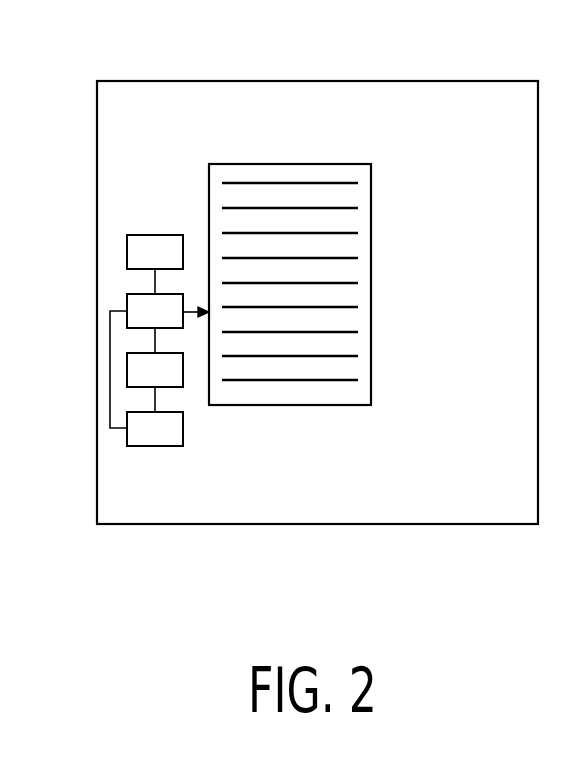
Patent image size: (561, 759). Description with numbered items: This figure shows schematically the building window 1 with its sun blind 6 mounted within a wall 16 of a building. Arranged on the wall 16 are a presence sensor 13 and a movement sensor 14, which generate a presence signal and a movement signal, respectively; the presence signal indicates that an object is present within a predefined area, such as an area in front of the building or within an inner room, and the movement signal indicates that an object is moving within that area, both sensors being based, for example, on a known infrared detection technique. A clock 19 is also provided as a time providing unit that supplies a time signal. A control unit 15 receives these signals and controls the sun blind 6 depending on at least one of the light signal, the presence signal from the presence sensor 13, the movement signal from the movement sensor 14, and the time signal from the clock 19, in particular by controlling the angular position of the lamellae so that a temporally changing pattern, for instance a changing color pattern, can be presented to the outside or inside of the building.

The building window 1 is at (327, 164).
The sun blind 6 is at (288, 355).
The presence sensor 13 is at (127, 244).
The movement sensor 14 is at (176, 387).
The control unit 15 is at (127, 299).
The wall 16 is at (468, 313).
The clock 19 is at (127, 439).